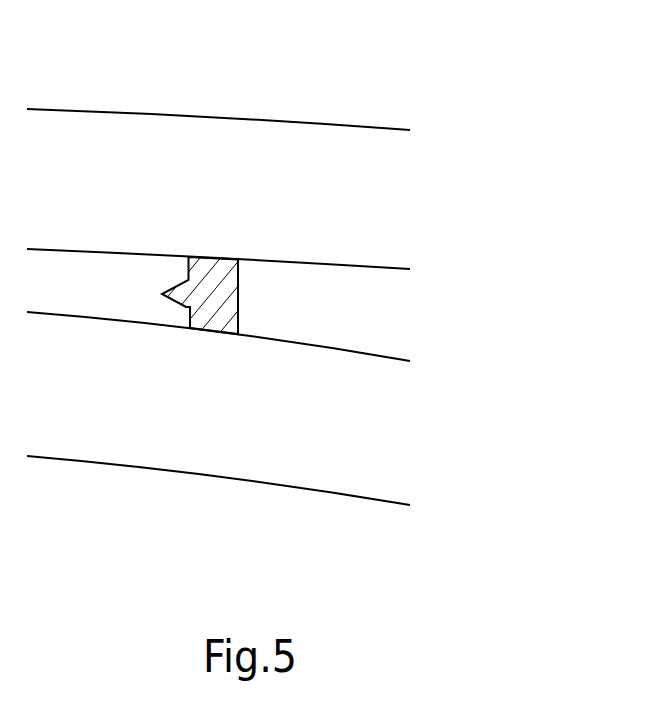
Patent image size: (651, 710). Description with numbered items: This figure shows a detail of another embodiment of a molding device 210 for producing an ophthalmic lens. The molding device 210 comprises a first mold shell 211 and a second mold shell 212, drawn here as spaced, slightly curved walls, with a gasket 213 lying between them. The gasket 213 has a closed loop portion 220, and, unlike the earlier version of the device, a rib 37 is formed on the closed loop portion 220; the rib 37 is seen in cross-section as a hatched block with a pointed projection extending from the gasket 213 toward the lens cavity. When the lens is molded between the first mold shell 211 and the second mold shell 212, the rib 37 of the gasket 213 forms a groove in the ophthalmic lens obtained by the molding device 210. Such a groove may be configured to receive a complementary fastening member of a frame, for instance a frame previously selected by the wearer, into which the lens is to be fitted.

The molding device 210 is at (471, 219).
The first mold shell 211 is at (340, 123).
The second mold shell 212 is at (360, 498).
The gasket 213 is at (238, 278).
The closed loop portion 220 is at (237, 315).
The rib 37 is at (172, 281).